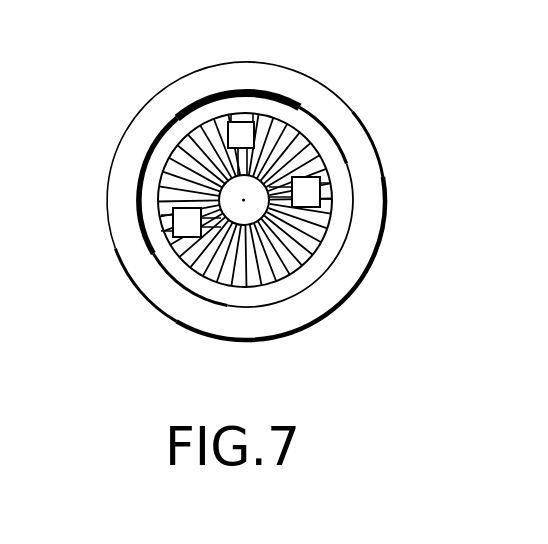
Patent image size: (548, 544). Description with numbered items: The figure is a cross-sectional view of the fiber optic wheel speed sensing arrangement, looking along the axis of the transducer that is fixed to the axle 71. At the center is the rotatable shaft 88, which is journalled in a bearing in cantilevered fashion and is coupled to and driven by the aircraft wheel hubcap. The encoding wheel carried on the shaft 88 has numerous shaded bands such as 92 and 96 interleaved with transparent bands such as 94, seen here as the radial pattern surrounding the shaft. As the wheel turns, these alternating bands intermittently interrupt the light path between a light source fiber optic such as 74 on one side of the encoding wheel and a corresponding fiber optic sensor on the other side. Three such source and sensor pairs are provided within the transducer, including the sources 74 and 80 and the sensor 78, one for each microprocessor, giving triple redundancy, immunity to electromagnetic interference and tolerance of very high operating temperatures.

The axle 71 is at (152, 112).
The light source fiber optic 74 is at (243, 130).
The fiber optic sensor 78 is at (180, 224).
The light source 80 is at (310, 182).
The rotatable shaft 88 is at (252, 210).
The shaded band 92 is at (213, 265).
The transparent band 94 is at (233, 268).
The shaded band 96 is at (248, 270).